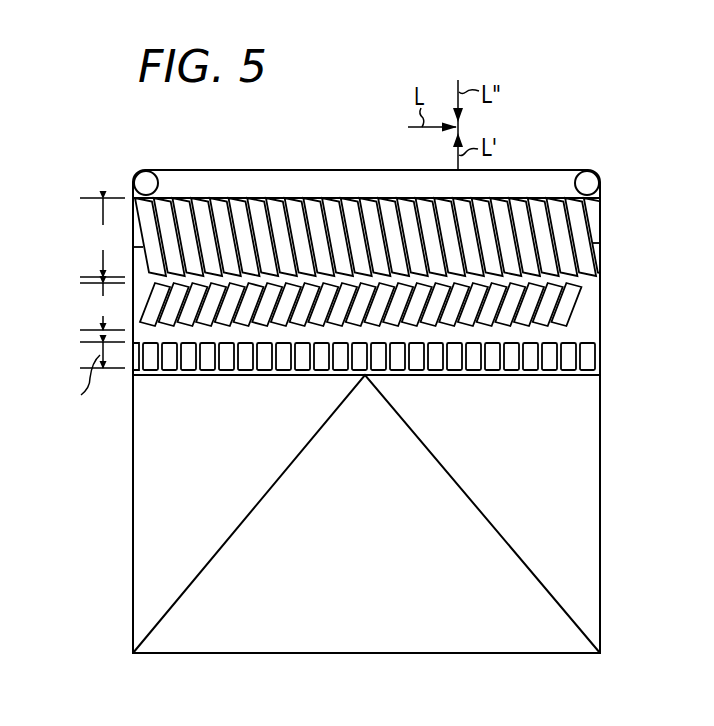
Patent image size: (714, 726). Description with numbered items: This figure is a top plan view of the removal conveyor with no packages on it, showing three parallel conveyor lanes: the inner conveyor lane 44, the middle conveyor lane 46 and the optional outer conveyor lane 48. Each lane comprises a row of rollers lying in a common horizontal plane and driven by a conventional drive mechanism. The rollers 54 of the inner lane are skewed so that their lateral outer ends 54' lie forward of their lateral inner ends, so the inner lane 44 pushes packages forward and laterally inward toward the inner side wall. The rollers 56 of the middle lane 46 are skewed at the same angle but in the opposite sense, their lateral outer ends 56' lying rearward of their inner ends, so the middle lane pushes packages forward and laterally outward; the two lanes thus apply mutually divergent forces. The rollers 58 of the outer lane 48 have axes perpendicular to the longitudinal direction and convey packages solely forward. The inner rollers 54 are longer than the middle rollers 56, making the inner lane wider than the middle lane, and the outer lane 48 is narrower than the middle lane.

The inner conveyor lane 44 is at (72, 198).
The middle conveyor lane 46 is at (72, 283).
The outer conveyor lane 48 is at (70, 342).
The inner lane rollers 54 is at (399, 199).
The lateral outer ends of inner rollers 54' is at (615, 237).
The middle lane rollers 56 is at (402, 358).
The lateral outer ends of middle rollers 56' is at (587, 317).
The outer lane rollers 58 is at (170, 376).